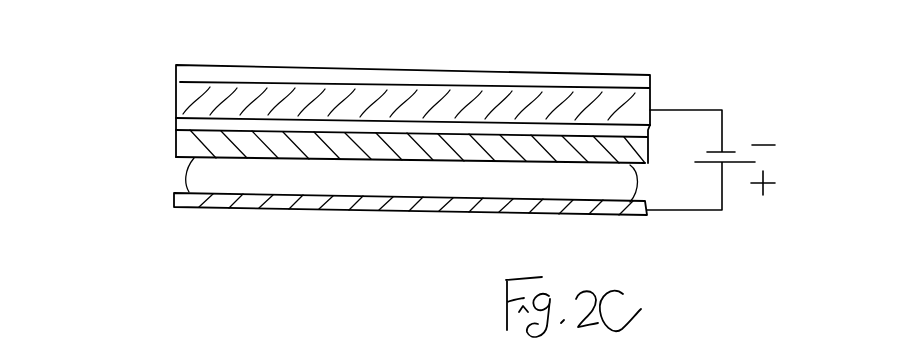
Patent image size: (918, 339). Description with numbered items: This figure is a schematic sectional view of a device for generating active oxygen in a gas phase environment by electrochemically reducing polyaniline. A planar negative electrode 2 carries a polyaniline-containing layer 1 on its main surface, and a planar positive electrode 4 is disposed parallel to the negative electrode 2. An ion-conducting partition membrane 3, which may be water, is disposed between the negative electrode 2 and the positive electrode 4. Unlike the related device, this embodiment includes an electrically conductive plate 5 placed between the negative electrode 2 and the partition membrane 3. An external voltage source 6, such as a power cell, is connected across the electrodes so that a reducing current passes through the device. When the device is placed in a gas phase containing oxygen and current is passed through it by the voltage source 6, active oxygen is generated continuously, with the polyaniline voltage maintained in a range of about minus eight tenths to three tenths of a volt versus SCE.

The polyaniline-containing layer 1 is at (264, 72).
The planar negative electrode 2 is at (329, 129).
The ion-conducting partition membrane 3 is at (248, 178).
The planar positive electrode 4 is at (292, 205).
The electrically conductive plate 5 is at (188, 143).
The voltage source 6 is at (785, 121).